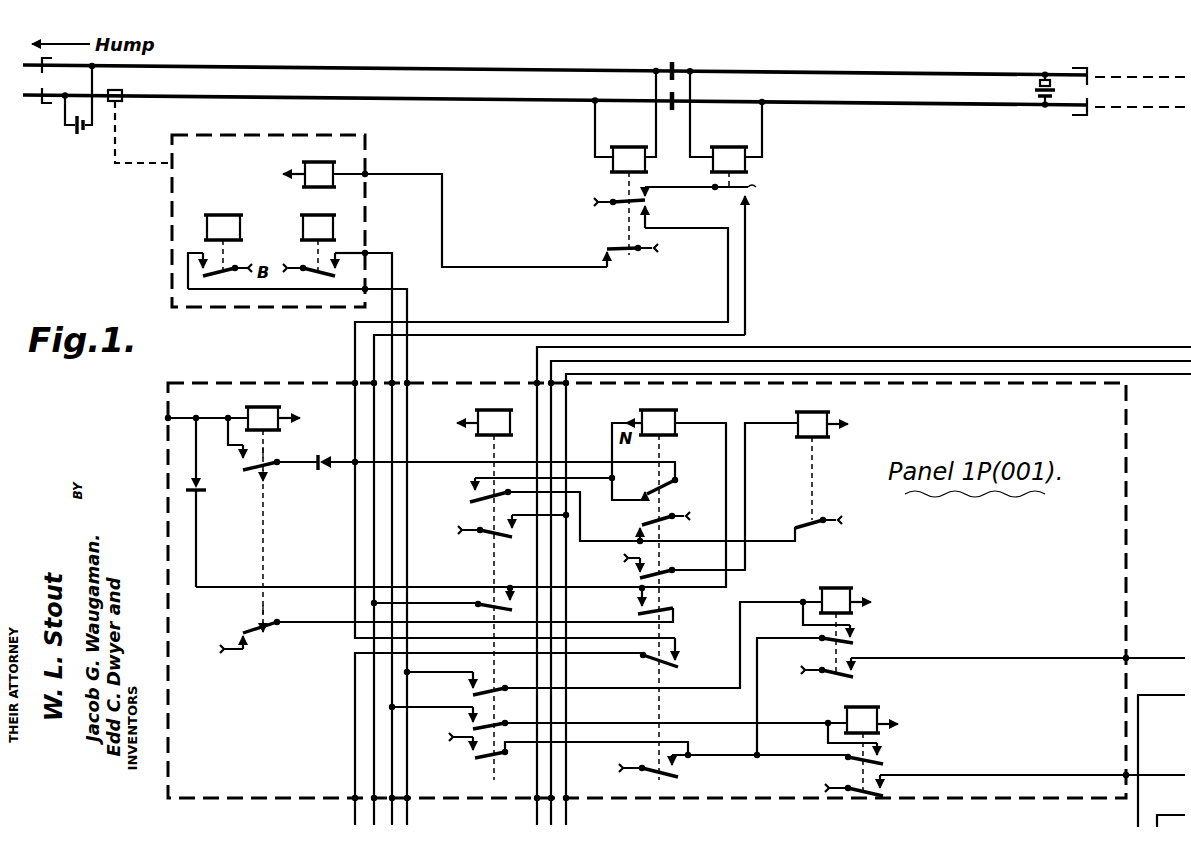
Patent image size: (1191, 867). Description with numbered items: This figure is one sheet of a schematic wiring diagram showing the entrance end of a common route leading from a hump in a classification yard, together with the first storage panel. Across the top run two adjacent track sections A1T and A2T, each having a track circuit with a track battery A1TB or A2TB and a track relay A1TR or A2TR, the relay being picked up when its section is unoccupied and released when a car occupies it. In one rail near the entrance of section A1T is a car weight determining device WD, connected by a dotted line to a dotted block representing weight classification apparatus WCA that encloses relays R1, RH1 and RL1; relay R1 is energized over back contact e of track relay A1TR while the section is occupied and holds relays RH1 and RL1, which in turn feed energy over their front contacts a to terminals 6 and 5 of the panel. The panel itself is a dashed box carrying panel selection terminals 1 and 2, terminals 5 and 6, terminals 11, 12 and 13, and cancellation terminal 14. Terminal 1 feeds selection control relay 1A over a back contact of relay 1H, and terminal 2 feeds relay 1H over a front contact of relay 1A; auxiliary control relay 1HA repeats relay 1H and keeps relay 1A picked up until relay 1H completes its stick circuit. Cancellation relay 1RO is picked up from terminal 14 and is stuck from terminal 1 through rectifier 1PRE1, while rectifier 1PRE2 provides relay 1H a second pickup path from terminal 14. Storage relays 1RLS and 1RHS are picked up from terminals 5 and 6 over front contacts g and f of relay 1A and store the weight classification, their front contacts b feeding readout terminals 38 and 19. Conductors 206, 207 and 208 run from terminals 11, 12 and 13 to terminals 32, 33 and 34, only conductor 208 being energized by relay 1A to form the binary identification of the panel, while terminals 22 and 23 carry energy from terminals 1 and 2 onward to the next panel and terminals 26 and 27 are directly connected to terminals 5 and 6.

The panel selection terminal 1 is at (353, 381).
The panel selection terminal 2 is at (553, 497).
The terminal 5 is at (380, 525).
The terminal 6 is at (393, 482).
The terminal 11 is at (536, 382).
The terminal 12 is at (549, 381).
The terminal 13 is at (568, 384).
The cancellation terminal 14 is at (166, 416).
The readout terminal 19 is at (1124, 657).
The terminal 22 is at (353, 796).
The terminal 23 is at (353, 800).
The terminal 26 is at (408, 796).
The terminal 27 is at (409, 800).
The terminal 32 is at (536, 798).
The terminal 33 is at (548, 796).
The terminal 34 is at (567, 798).
The readout terminal 38 is at (1124, 774).
The conductor 206 is at (540, 403).
The conductor 207 is at (553, 436).
The conductor 208 is at (566, 448).
The track section A1T is at (347, 80).
The track section A2T is at (928, 91).
The track battery A1TB is at (72, 137).
The track battery A2TB is at (1040, 78).
The car weight determining device WD is at (138, 117).
The weight classification apparatus WCA is at (241, 221).
The relay R1 is at (299, 164).
The relay RH1 is at (221, 234).
The relay RL1 is at (312, 234).
The track relay A1TR is at (623, 165).
The track relay A2TR is at (729, 134).
The cancellation relay 1RO is at (258, 522).
The rectifier 1PRE1 is at (316, 474).
The rectifier 1PRE2 is at (207, 492).
The selection control relay 1A is at (477, 587).
The selection control relay 1H is at (651, 589).
The auxiliary control relay 1HA is at (822, 460).
The storage relay 1RHS is at (834, 624).
The storage relay 1RLS is at (859, 744).